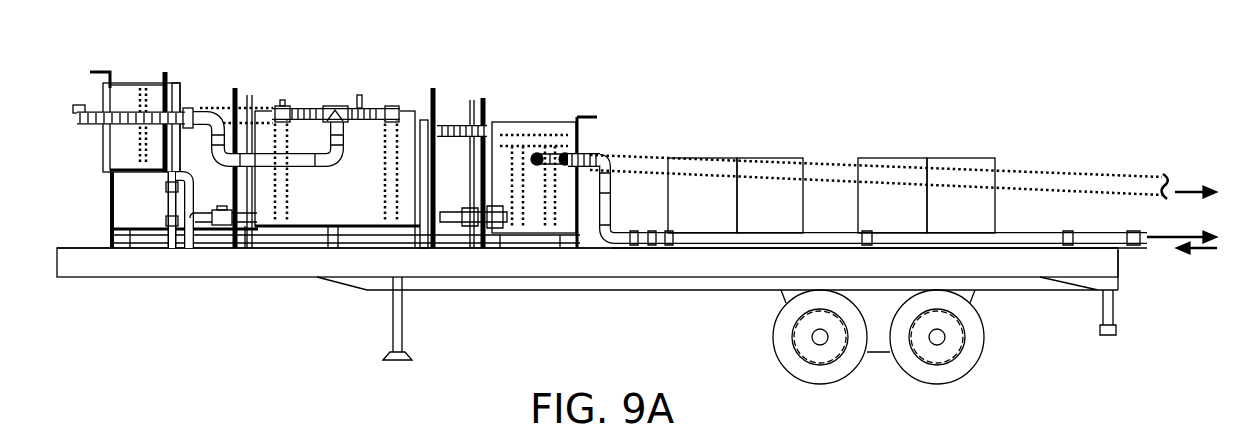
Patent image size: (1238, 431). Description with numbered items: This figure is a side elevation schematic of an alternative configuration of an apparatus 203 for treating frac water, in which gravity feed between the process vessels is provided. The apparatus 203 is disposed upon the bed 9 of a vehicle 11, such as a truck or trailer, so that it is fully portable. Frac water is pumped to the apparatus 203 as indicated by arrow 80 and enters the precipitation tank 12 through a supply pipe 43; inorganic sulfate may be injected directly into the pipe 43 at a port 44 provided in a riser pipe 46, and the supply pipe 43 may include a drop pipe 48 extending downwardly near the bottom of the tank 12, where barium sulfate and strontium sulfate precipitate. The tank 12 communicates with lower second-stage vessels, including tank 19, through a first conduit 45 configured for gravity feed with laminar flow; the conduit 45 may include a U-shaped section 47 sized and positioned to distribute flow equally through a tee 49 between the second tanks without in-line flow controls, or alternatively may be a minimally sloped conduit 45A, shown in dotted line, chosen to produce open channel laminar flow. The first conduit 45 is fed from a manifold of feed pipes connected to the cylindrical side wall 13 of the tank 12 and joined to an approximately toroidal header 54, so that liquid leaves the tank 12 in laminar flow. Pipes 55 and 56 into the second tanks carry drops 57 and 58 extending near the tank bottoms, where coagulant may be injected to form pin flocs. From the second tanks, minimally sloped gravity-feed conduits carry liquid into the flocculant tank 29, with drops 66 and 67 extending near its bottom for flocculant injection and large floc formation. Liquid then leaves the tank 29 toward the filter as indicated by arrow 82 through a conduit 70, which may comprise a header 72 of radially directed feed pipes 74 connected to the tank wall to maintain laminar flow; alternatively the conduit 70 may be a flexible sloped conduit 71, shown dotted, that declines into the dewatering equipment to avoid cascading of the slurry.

The bed 9 is at (75, 248).
The vehicle 11 is at (441, 306).
The tank 12 is at (125, 83).
The side wall 13 is at (122, 98).
The tank 19 is at (415, 110).
The tank 29 is at (508, 122).
The pipe 43 is at (157, 83).
The port 44 is at (188, 217).
The first conduit 45 is at (193, 107).
The minimally sloped conduit 45A is at (268, 108).
The riser pipe 46 is at (163, 205).
The U-shaped section 47 is at (261, 172).
The drop pipe 48 is at (140, 147).
The tee 49 is at (337, 106).
The header 54 is at (92, 123).
The pipe 55 is at (282, 104).
The pipe 56 is at (392, 106).
The drop 57 is at (290, 205).
The drop 58 is at (384, 205).
The drop 66 is at (527, 207).
The drop 67 is at (542, 210).
The conduit 70 is at (613, 183).
The flexible sloped conduit 71 is at (1022, 173).
The header 72 is at (588, 155).
The feed pipes 74 is at (538, 152).
The arrow 80 is at (1203, 249).
The arrow 82 is at (1183, 193).
The apparatus 203 is at (792, 94).